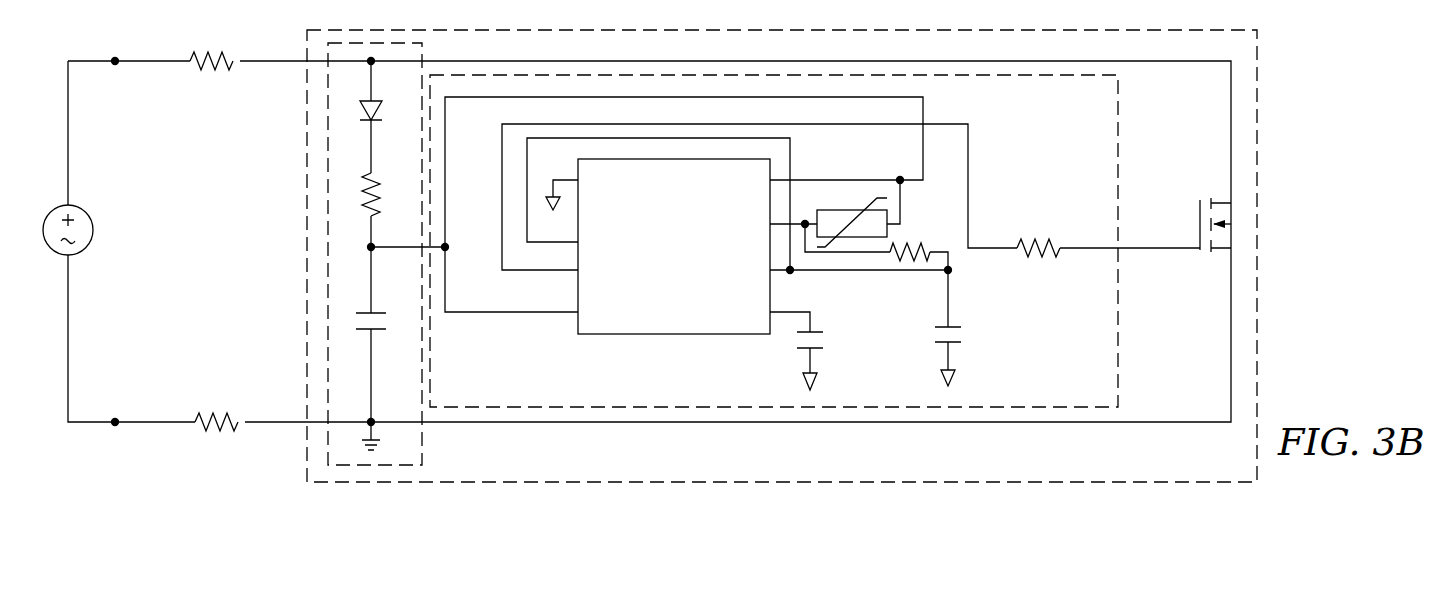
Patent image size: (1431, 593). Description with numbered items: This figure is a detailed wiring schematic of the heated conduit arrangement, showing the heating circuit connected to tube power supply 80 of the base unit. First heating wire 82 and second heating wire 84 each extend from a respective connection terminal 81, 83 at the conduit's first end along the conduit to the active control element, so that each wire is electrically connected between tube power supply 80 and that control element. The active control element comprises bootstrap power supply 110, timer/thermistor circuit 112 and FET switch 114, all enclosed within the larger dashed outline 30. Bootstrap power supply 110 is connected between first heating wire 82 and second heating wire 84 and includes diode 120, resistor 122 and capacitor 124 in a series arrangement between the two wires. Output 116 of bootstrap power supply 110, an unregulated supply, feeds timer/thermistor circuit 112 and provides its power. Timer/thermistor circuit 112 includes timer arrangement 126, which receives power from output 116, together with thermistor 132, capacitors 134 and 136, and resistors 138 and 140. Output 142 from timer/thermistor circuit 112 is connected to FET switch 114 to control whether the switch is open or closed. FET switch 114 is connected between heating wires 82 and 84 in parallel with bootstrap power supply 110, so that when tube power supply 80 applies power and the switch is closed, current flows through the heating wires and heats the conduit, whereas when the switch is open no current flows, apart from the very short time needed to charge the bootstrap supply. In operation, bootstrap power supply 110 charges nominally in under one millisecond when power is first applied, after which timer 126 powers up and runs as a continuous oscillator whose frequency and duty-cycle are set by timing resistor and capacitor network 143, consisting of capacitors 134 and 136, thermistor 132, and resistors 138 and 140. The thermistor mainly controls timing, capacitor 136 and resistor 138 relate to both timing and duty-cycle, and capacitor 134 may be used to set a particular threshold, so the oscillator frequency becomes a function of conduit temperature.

The heater control circuit 30 is at (775, 28).
The tube power supply 80 is at (93, 232).
The connection terminal 81 is at (117, 58).
The first heating wire 82 is at (204, 76).
The connection terminal 83 is at (115, 420).
The second heating wire 84 is at (212, 416).
The bootstrap power supply 110 is at (308, 78).
The timer/thermistor circuit 112 is at (1121, 122).
The FET switch 114 is at (1194, 214).
The output 116 is at (397, 250).
The diode 120 is at (354, 112).
The resistor 122 is at (360, 182).
The capacitor 124 is at (392, 328).
The timer arrangement 126 is at (652, 335).
The thermistor 132 is at (840, 207).
The capacitor 134 is at (834, 337).
The capacitor 136 is at (976, 332).
The resistor 138 is at (914, 238).
The resistor 140 is at (1026, 235).
The output 142 is at (1086, 246).
The timing resistor and capacitor network 143 is at (882, 388).